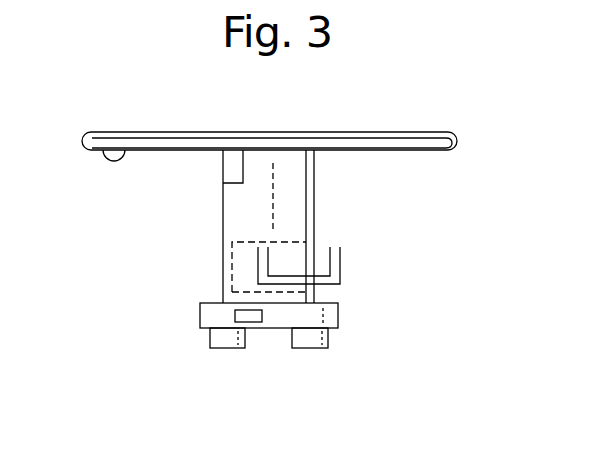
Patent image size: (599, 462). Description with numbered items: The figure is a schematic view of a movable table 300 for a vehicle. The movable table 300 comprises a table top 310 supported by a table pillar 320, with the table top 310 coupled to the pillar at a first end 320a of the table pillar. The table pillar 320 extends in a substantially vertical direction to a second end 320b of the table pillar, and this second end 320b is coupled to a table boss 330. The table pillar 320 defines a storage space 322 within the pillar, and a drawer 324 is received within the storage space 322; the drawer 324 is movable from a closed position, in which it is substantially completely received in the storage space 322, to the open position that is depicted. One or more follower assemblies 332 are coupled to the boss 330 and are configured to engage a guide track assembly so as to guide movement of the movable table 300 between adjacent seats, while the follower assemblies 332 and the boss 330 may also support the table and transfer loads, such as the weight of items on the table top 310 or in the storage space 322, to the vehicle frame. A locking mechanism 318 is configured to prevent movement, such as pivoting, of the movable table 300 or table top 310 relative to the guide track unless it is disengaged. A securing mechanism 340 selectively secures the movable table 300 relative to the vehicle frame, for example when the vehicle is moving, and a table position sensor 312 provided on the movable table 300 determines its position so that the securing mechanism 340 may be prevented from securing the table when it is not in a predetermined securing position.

The movable table 300 is at (472, 201).
The table top 310 is at (405, 141).
The table position sensor 312 is at (112, 161).
The locking mechanism 318 is at (233, 170).
The table pillar 320 is at (255, 226).
The first end of the table pillar 320a is at (297, 153).
The second end of the table pillar 320b is at (233, 302).
The storage space 322 is at (283, 242).
The drawer 324 is at (338, 267).
The table boss 330 is at (212, 315).
The follower assemblies 332 is at (218, 347).
The securing mechanism 340 is at (253, 317).